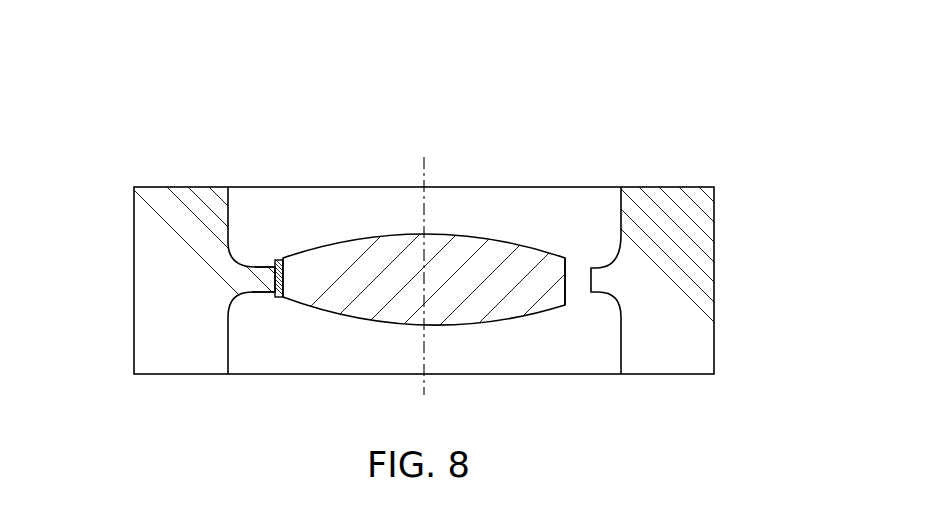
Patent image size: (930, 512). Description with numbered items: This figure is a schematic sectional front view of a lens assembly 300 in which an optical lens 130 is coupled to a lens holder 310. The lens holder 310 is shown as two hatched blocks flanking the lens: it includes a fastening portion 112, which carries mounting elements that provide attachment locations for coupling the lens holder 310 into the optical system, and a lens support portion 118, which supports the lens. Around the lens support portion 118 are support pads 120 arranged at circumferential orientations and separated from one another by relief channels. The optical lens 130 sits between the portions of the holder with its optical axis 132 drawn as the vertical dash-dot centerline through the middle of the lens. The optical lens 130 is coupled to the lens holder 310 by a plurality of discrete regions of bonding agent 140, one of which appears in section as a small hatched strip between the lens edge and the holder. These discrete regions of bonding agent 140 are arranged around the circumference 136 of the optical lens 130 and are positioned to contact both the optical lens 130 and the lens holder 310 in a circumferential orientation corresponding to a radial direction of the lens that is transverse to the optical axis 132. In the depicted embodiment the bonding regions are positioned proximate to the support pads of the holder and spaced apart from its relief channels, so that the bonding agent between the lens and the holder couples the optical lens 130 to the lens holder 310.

The lens assembly 300 is at (669, 102).
The lens holder 310 is at (165, 154).
The fastening portion 112 is at (665, 187).
The support pads 120 is at (265, 267).
The lens support portion 118 is at (250, 292).
The discrete regions of bonding agent 140 is at (279, 259).
The optical lens 130 is at (432, 216).
The optical axis 132 is at (422, 162).
The circumference 136 is at (568, 266).